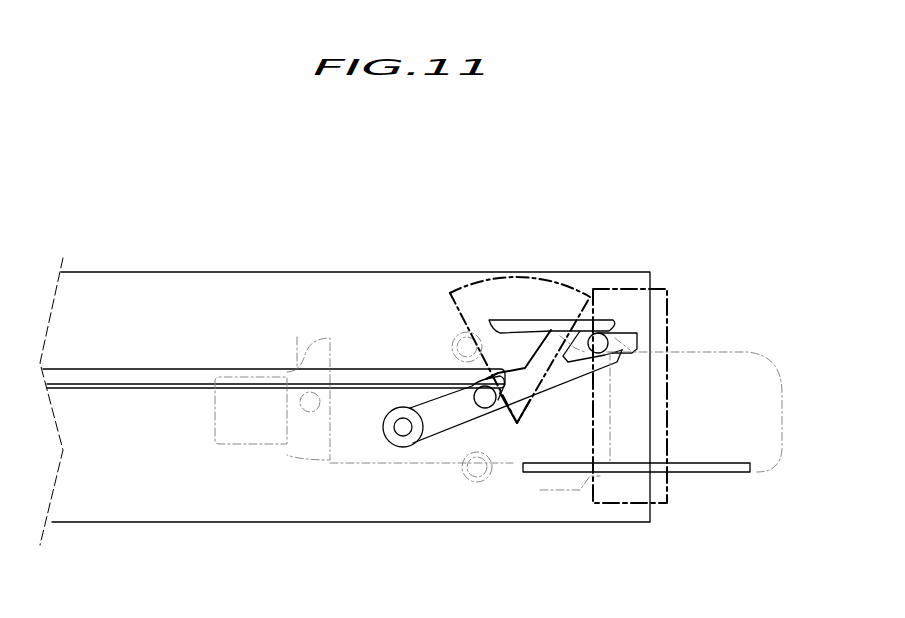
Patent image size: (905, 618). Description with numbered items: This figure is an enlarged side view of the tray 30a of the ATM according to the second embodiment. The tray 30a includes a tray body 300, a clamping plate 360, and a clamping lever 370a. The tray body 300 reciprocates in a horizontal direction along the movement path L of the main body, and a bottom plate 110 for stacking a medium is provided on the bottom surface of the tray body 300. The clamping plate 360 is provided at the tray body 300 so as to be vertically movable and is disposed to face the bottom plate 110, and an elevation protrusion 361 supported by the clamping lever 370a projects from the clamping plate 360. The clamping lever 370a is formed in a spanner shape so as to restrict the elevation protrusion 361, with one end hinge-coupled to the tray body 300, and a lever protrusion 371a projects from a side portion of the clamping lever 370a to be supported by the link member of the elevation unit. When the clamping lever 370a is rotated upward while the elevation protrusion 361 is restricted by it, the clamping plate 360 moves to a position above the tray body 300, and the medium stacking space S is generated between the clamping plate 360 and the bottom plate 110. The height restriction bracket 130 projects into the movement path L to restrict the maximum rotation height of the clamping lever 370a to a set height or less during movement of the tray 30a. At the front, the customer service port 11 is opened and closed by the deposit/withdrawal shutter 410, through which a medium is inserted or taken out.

The tray body 300 is at (380, 353).
The height restriction bracket 130 is at (148, 377).
The tray 30a is at (291, 316).
The clamping lever 370a is at (438, 417).
The lever protrusion 371a is at (485, 408).
The clamping plate 360 is at (550, 320).
The elevation protrusion 361 is at (606, 334).
The deposit/withdrawal shutter 410 is at (525, 275).
The customer service port 11 is at (663, 290).
The bottom plate 110 is at (733, 472).
The medium stacking space S is at (633, 435).
The movement path L is at (145, 520).